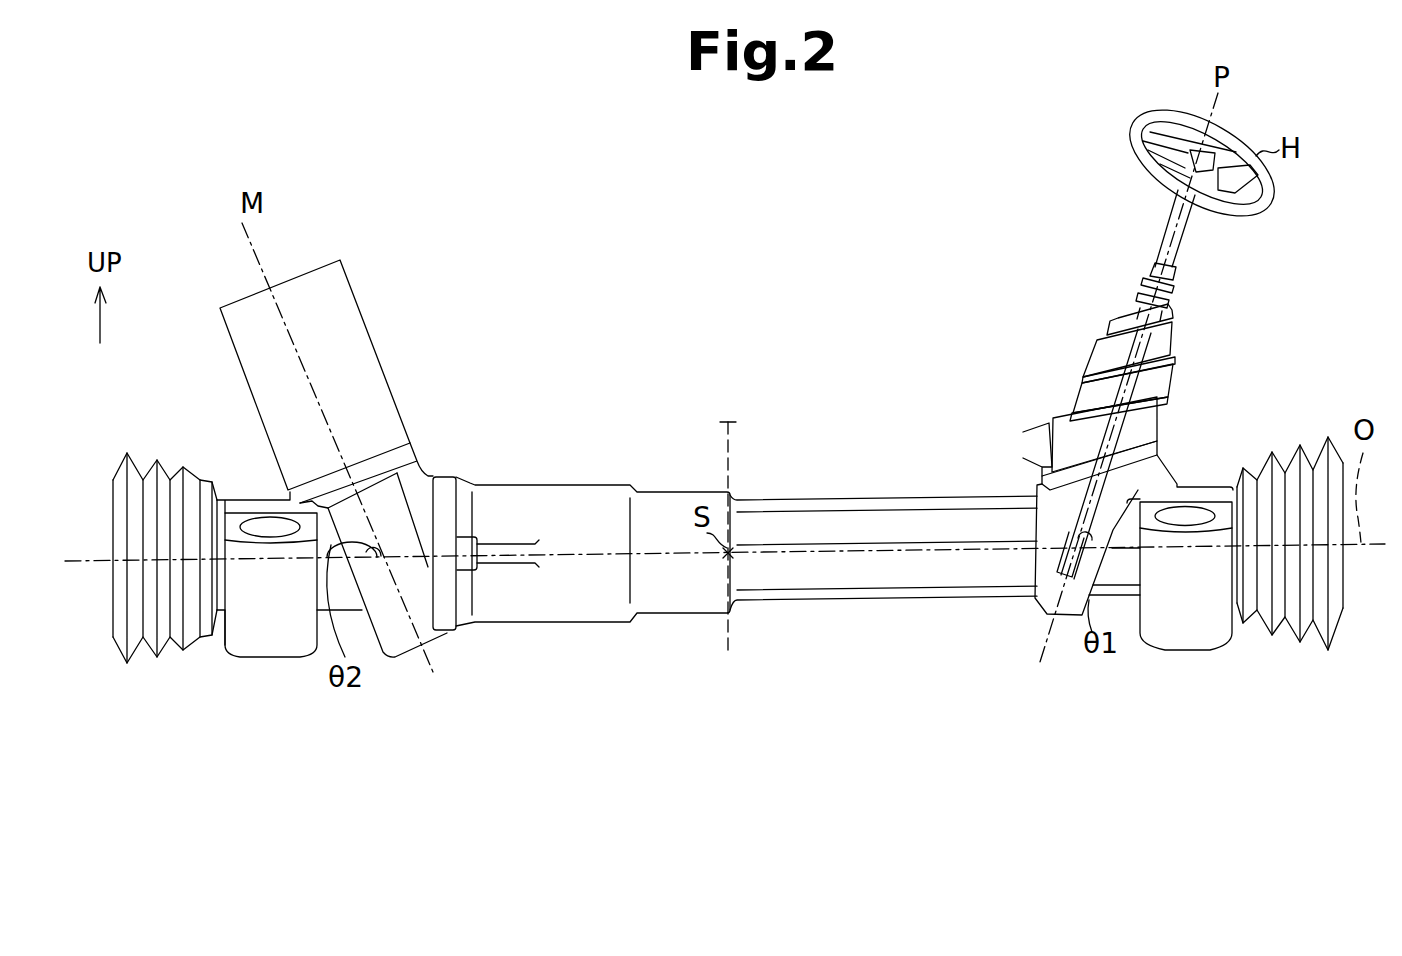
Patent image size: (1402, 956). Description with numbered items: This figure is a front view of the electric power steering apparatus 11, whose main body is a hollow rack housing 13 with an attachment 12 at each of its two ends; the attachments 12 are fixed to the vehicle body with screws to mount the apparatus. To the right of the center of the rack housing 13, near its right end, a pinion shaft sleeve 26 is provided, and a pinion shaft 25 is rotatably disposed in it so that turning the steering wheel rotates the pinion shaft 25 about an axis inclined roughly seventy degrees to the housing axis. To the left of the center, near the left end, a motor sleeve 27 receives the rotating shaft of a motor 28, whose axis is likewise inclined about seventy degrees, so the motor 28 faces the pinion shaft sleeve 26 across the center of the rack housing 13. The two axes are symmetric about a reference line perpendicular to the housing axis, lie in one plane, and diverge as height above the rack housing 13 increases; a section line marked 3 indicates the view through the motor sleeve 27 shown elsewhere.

The section line III-III 3 is at (306, 385).
The electric power steering apparatus 11 is at (924, 275).
The attachments 12 is at (268, 657).
The rack housing 13 is at (675, 495).
The pinion shaft 25 is at (1176, 383).
The pinion shaft sleeve 26 is at (1023, 433).
The motor sleeve 27 is at (413, 448).
The motor 28 is at (378, 371).